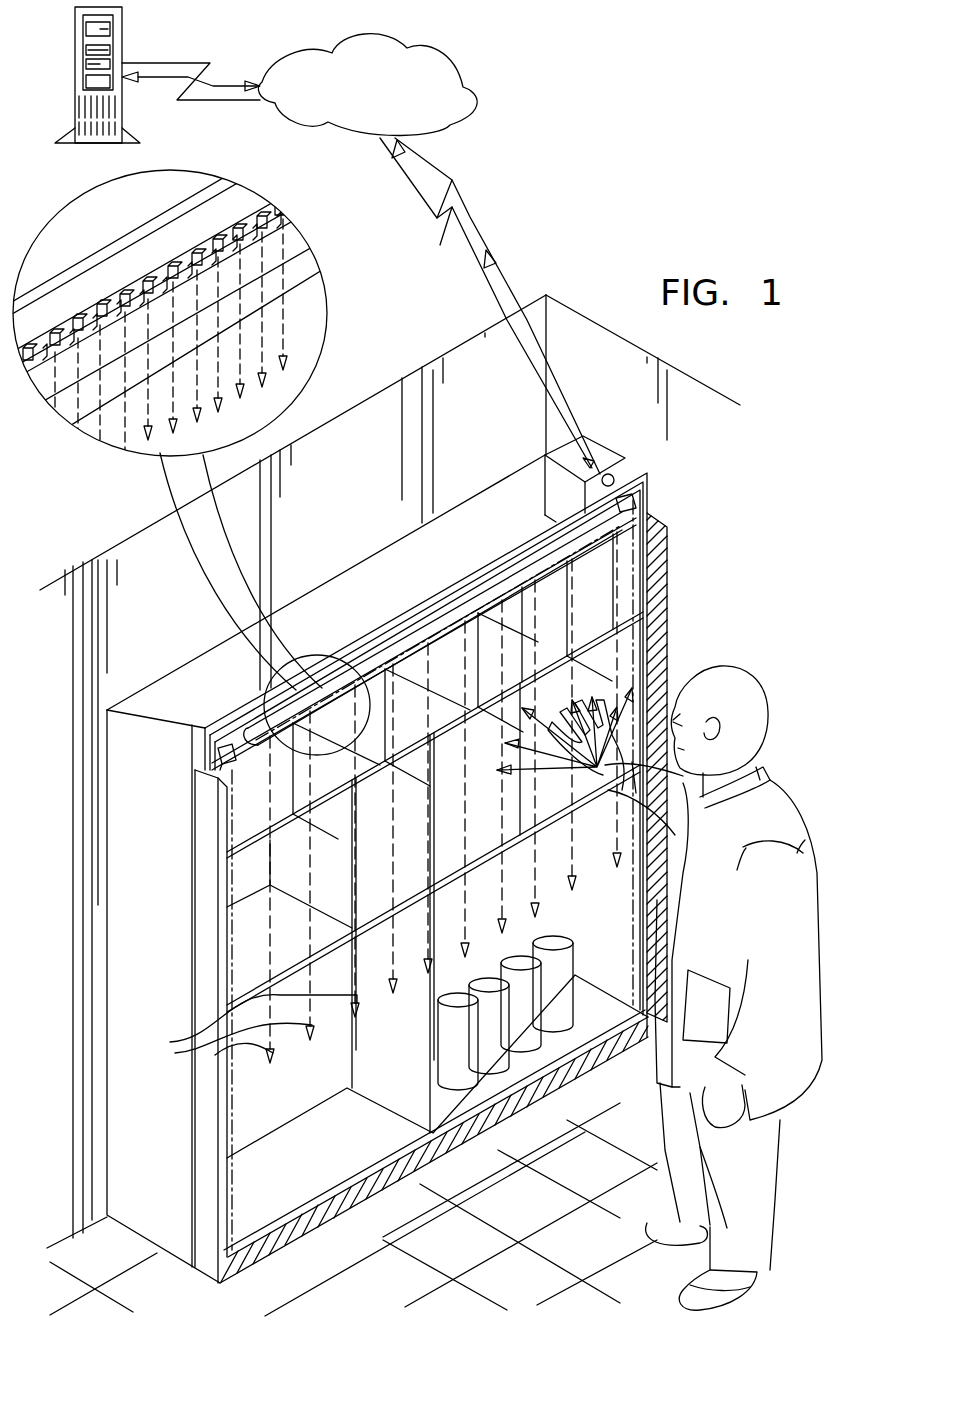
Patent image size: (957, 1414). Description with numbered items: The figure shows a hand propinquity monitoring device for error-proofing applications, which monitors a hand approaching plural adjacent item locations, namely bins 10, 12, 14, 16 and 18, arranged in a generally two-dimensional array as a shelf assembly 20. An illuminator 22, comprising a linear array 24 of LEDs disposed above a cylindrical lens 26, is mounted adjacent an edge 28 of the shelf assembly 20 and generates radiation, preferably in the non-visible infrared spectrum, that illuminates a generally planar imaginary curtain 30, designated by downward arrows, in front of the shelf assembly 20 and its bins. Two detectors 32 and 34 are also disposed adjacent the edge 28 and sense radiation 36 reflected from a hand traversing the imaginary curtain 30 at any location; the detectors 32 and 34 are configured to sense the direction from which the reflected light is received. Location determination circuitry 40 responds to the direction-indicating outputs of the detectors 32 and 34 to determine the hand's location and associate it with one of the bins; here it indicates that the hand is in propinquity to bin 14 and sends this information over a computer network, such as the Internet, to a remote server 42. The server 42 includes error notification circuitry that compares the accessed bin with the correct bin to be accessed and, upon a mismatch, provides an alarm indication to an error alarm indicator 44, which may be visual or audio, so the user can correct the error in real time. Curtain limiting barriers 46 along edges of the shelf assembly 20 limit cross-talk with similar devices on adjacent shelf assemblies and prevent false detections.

The bin 10 is at (640, 580).
The bin 12 is at (540, 612).
The bin 14 is at (652, 645).
The bin 16 is at (452, 718).
The bin 18 is at (589, 1106).
The shelf assembly 20 is at (134, 790).
The illuminator 22 is at (250, 692).
The linear array of LEDs 24 is at (200, 250).
The cylindrical lens 26 is at (305, 217).
The edge of shelf assembly 28 is at (214, 786).
The imaginary curtain 30 is at (394, 961).
The detector 32 is at (640, 503).
The detector 34 is at (215, 757).
The reflected radiation 36 is at (698, 690).
The location determination circuitry 40 is at (599, 455).
The remote server 42 is at (122, 40).
The error alarm indicator 44 is at (602, 482).
The curtain limiting barriers 46 is at (660, 535).